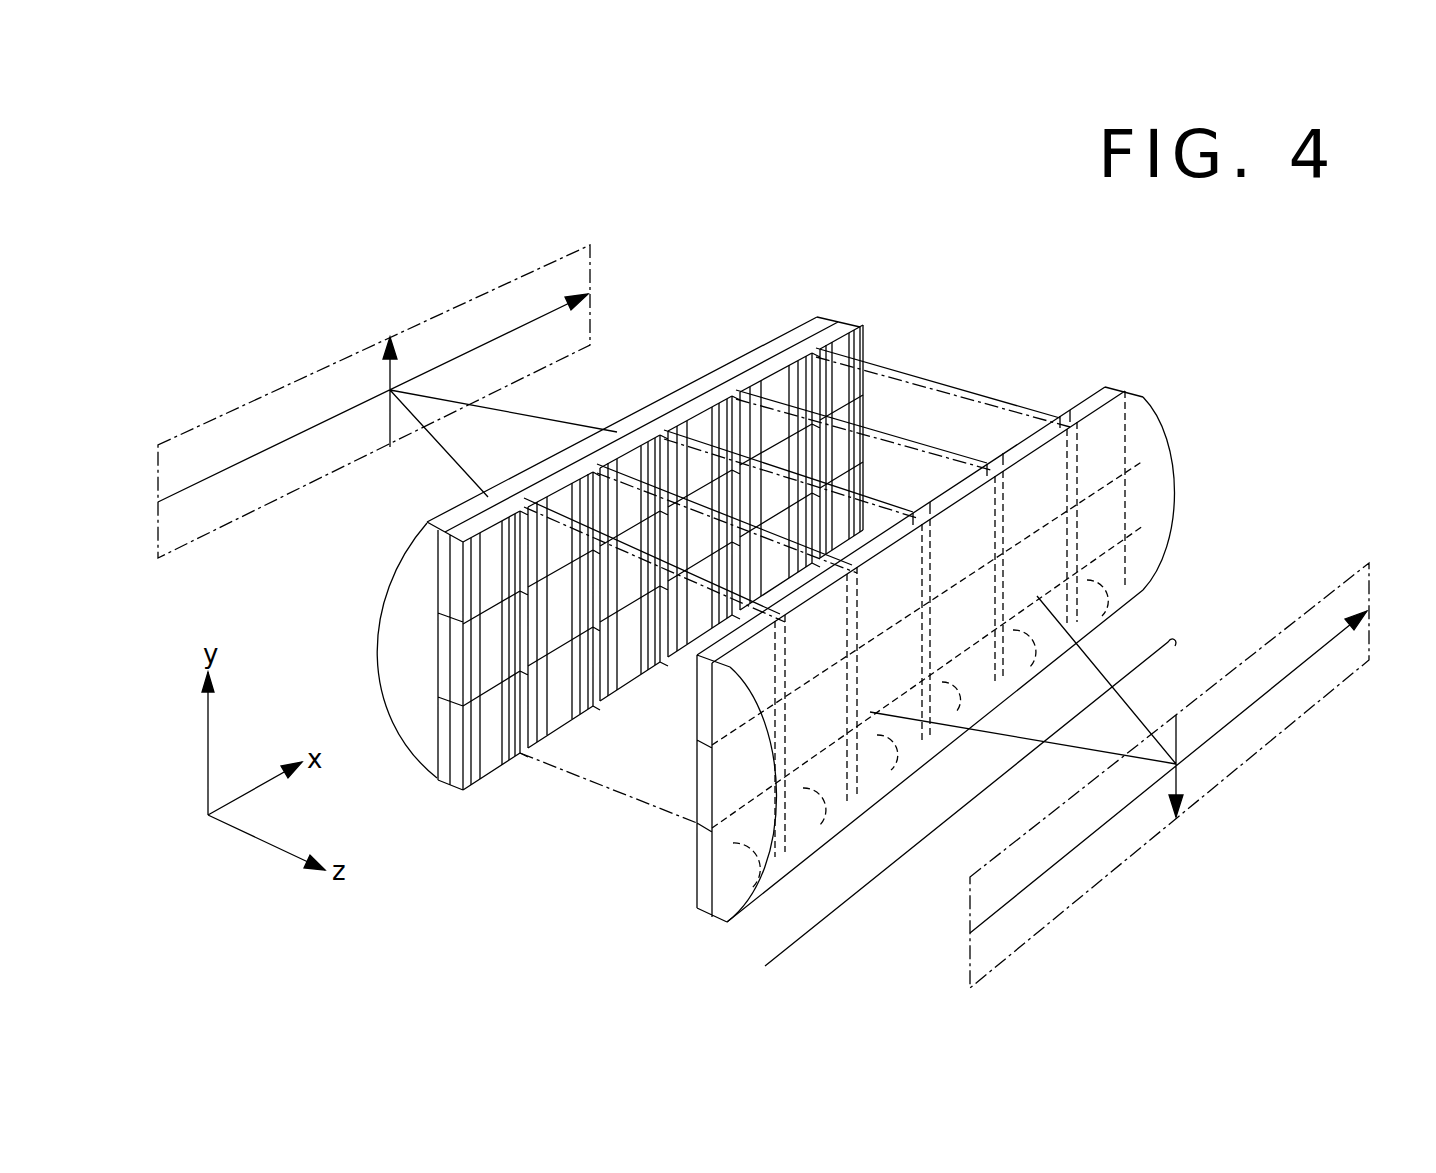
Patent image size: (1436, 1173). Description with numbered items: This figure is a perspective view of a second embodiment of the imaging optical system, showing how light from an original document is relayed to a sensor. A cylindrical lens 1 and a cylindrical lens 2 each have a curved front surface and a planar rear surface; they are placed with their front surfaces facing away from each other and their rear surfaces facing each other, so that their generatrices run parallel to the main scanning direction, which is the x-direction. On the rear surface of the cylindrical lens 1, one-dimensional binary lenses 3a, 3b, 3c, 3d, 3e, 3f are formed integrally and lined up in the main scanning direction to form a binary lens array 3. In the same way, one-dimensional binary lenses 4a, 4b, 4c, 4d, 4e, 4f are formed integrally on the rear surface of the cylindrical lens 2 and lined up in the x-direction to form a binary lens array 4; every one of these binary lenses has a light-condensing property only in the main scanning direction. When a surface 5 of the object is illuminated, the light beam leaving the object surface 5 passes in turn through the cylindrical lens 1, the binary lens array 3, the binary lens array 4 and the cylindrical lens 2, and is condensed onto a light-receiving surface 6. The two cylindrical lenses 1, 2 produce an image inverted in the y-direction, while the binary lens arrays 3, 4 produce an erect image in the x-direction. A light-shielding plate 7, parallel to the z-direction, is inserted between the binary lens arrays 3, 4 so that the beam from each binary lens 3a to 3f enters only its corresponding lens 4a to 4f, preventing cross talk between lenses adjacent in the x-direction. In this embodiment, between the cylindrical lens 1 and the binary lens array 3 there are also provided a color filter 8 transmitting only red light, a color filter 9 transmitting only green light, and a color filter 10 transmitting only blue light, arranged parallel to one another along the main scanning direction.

The cylindrical lens 1 is at (407, 590).
The cylindrical lens 2 is at (1145, 502).
The binary lens array 3 is at (370, 486).
The one-dimensional binary lens 3a is at (483, 522).
The one-dimensional binary lens 3b is at (557, 480).
The one-dimensional binary lens 3c is at (630, 440).
The one-dimensional binary lens 3d is at (703, 407).
The one-dimensional binary lens 3e is at (773, 370).
The one-dimensional binary lens 3f is at (835, 335).
The binary lens array 4 is at (989, 787).
The one-dimensional binary lens 4a is at (752, 888).
The one-dimensional binary lens 4b is at (828, 830).
The one-dimensional binary lens 4c is at (900, 775).
The one-dimensional binary lens 4d is at (960, 715).
The one-dimensional binary lens 4e is at (1033, 672).
The one-dimensional binary lens 4f is at (1108, 623).
The object surface 5 is at (518, 277).
The light-receiving surface 6 is at (1301, 609).
The light-shielding plate 7 is at (975, 422).
The color filter 8 is at (440, 575).
The color filter 9 is at (440, 645).
The color filter 10 is at (440, 727).